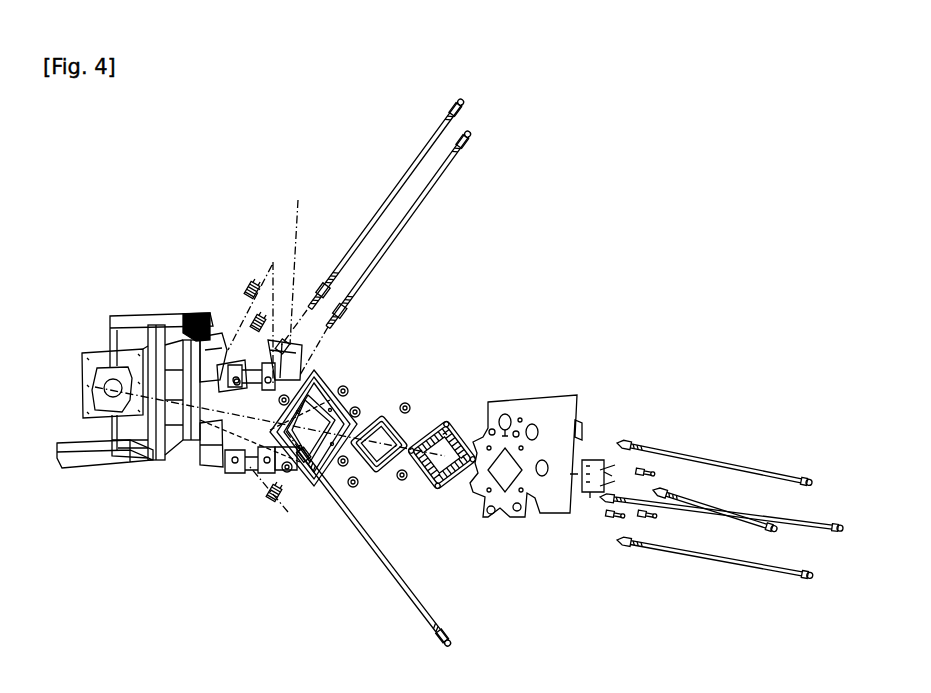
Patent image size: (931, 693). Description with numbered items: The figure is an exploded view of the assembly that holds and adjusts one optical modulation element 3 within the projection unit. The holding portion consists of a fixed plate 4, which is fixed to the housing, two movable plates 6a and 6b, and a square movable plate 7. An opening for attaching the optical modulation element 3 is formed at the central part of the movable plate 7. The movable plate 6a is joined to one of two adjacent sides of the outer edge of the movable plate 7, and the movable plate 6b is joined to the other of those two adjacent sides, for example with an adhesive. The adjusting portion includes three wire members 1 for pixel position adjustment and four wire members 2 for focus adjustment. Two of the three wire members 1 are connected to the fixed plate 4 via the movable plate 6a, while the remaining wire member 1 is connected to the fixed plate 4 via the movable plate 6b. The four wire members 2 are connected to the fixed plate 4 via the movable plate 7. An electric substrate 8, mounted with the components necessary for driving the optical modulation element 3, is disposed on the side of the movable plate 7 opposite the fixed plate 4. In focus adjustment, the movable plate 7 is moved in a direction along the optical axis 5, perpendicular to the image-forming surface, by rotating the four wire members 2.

The wire member 1 is at (387, 197).
The wire member 2 is at (748, 460).
The optical modulation element 3 is at (378, 407).
The fixed plate 4 is at (210, 322).
The optical axis 5 is at (350, 490).
The movable plate 6a is at (283, 335).
The movable plate 6b is at (243, 475).
The movable plate 7 is at (343, 383).
The electric substrate 8 is at (545, 395).